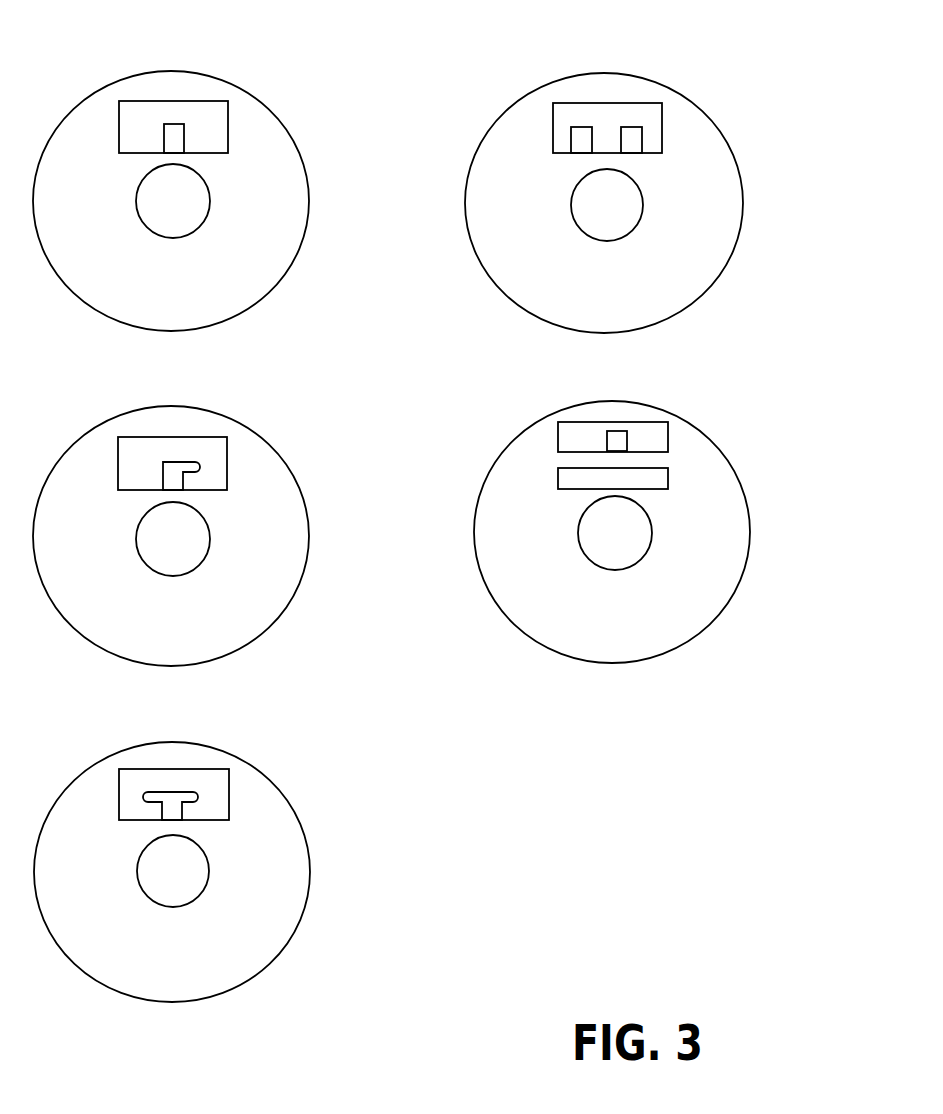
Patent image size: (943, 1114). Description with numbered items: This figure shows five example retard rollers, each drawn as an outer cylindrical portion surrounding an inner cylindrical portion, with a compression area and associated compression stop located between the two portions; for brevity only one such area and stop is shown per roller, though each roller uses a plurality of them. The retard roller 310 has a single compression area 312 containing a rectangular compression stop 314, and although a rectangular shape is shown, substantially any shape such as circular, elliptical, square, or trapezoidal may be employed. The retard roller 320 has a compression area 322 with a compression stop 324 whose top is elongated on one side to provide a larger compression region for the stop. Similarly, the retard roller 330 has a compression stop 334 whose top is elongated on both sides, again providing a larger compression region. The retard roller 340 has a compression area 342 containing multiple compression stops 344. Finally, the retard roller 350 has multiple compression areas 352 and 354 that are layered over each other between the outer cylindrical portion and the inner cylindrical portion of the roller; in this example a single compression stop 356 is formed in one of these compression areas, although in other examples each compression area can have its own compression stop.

The retard roller 310 is at (290, 110).
The compression area 312 is at (183, 101).
The rectangular compression stop 314 is at (168, 123).
The retard roller 320 is at (290, 438).
The compression area 322 is at (173, 437).
The compression stop 324 is at (177, 462).
The retard roller 330 is at (275, 764).
The compression stop 334 is at (167, 792).
The retard roller 340 is at (699, 86).
The compression area 342 is at (602, 102).
The compression stops 344 is at (570, 143).
The retard roller 350 is at (725, 429).
The compression area 352 is at (631, 422).
The compression area 354 is at (668, 478).
The compression stop 356 is at (608, 439).